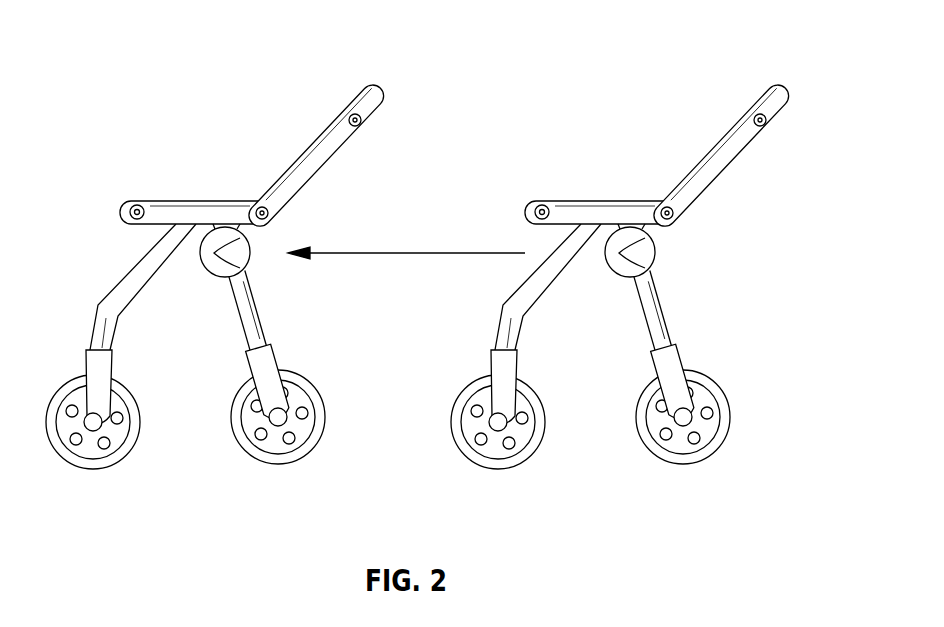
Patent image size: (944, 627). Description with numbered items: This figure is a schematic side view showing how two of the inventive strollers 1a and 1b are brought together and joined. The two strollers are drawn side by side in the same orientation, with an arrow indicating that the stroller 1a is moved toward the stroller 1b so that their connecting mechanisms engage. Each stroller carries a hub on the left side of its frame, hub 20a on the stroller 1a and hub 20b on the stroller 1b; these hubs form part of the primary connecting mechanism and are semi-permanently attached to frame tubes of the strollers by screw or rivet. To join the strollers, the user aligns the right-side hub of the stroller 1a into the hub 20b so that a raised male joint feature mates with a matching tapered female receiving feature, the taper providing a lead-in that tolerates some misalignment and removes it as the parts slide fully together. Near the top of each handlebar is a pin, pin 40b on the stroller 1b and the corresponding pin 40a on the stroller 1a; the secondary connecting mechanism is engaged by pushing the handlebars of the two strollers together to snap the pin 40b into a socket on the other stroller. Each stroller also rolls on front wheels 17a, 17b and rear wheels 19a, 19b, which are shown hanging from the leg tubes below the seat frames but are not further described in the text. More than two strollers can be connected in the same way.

The stroller 1a is at (662, 182).
The stroller 1b is at (114, 88).
The front wheel 17a is at (488, 425).
The front wheel 17b is at (92, 471).
The rear wheel 19a is at (673, 386).
The rear wheel 19b is at (278, 465).
The hub 20a is at (613, 294).
The hub 20b is at (217, 278).
The handle pivot 40a is at (776, 156).
The pin 40b is at (361, 122).